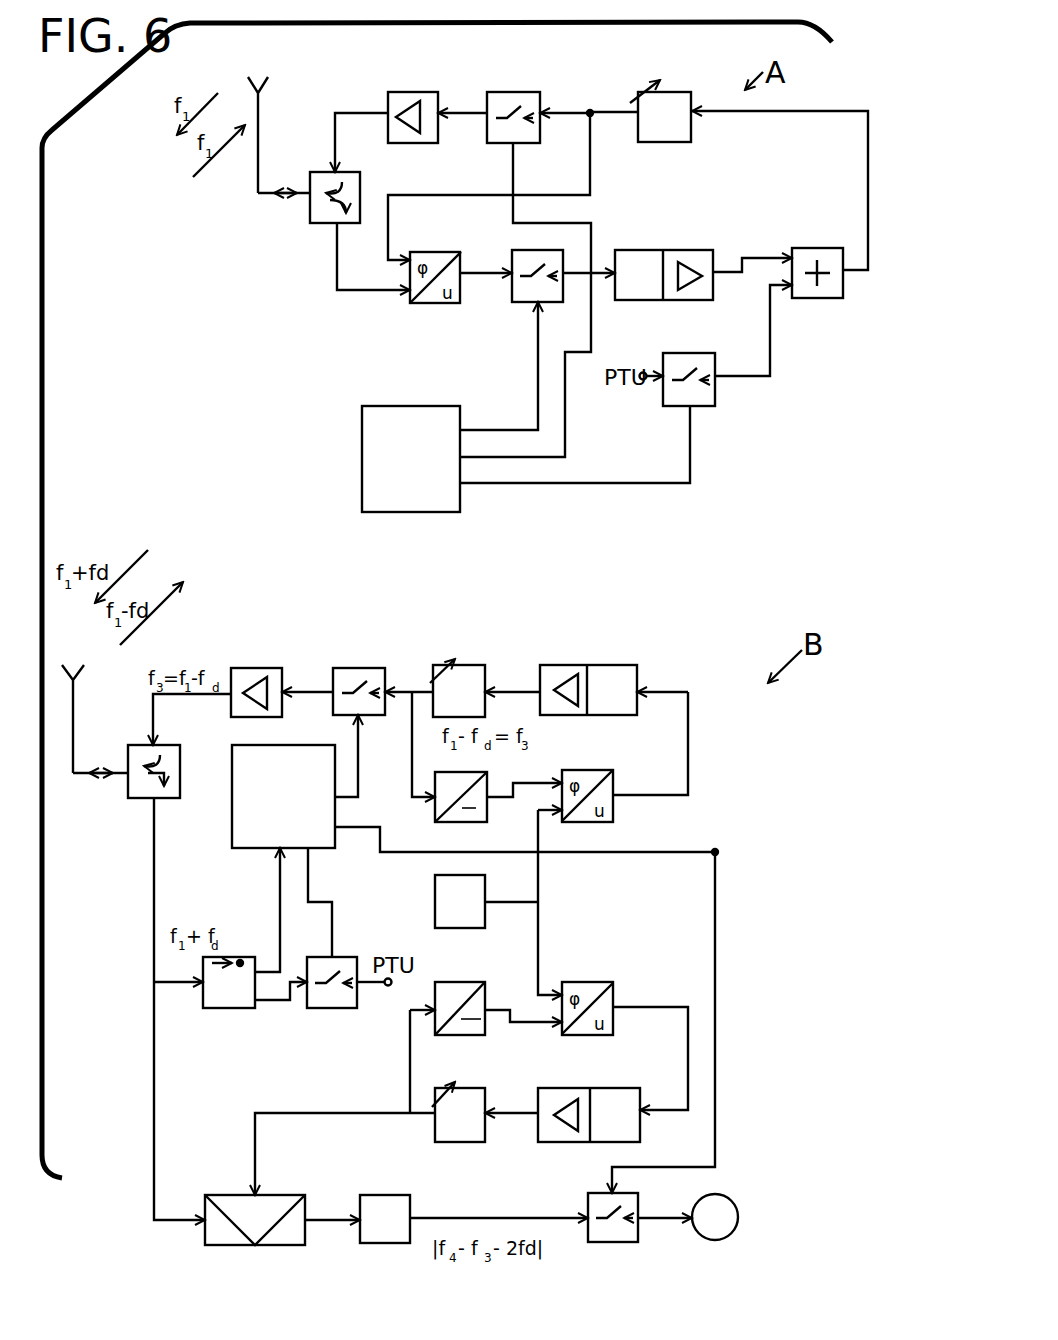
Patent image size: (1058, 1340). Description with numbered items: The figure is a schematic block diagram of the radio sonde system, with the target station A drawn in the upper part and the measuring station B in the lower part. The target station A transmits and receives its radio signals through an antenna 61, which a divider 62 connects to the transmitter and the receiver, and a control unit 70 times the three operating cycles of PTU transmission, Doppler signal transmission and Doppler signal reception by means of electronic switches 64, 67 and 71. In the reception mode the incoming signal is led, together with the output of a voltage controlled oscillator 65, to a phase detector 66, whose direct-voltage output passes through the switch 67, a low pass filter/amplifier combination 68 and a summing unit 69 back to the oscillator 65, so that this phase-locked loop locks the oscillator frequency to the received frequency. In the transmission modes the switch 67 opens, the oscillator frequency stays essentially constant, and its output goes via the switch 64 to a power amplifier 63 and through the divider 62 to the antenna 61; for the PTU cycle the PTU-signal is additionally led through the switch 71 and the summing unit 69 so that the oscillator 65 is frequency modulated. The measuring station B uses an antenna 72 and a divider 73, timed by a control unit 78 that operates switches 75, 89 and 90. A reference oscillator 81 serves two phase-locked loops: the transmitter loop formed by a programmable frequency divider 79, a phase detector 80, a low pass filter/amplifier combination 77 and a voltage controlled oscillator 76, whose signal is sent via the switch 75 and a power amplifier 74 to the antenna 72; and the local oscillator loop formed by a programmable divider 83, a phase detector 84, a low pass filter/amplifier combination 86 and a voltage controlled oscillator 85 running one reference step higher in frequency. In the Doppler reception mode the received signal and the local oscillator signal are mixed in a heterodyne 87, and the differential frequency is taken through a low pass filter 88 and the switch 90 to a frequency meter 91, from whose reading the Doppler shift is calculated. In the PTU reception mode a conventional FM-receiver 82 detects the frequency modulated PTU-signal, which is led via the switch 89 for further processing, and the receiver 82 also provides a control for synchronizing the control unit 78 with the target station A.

The antenna 61 is at (267, 84).
The divider 62 is at (313, 222).
The power amplifier 63 is at (404, 92).
The electronic switch 64 is at (509, 92).
The voltage controlled oscillator 65 is at (672, 90).
The phase detector 66 is at (433, 252).
The switch 67 is at (513, 290).
The low pass filter/amplifier combination 68 is at (695, 250).
The summing unit 69 is at (810, 246).
The control unit 70 is at (434, 406).
The switch 71 is at (680, 353).
The antenna 72 is at (80, 670).
The divider 73 is at (140, 800).
The power amplifier 74 is at (258, 668).
The switch 75 is at (357, 668).
The voltage controlled oscillator 76 is at (466, 668).
The low pass filter/amplifier combination 77 is at (557, 665).
The control unit 78 is at (234, 830).
The programmable frequency divider 79 is at (470, 770).
The phase detector 80 is at (600, 768).
The reference oscillator 81 is at (435, 893).
The FM-receiver 82 is at (217, 1012).
The programmable divider 83 is at (475, 980).
The phase detector 84 is at (593, 980).
The voltage controlled oscillator 85 is at (480, 1088).
The low pass filter/amplifier combination 86 is at (574, 1088).
The heterodyne 87 is at (289, 1195).
The low pass filter 88 is at (376, 1195).
The switch 89 is at (340, 957).
The switch 90 is at (602, 1200).
The frequency meter 91 is at (727, 1200).